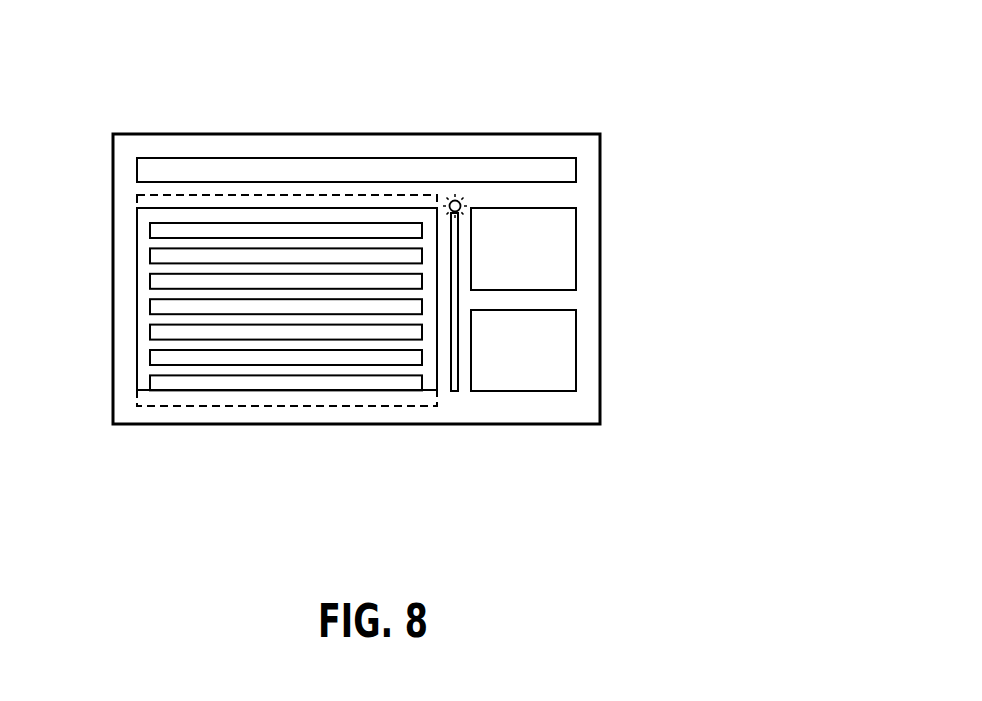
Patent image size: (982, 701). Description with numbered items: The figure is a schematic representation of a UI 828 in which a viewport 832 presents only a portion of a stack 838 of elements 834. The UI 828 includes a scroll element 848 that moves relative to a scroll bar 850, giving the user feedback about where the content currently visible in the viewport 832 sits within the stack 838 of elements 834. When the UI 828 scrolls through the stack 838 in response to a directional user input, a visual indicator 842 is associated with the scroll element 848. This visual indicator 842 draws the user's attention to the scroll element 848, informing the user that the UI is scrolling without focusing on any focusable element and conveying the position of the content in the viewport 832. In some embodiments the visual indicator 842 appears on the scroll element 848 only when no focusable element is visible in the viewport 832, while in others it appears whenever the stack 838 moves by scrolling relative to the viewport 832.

The UI 828 is at (728, 58).
The viewport 832 is at (425, 392).
The elements 834 is at (150, 254).
The stack 838 is at (438, 310).
The visual indicator 842 is at (455, 200).
The scroll element 848 is at (459, 200).
The scroll bar 850 is at (453, 392).